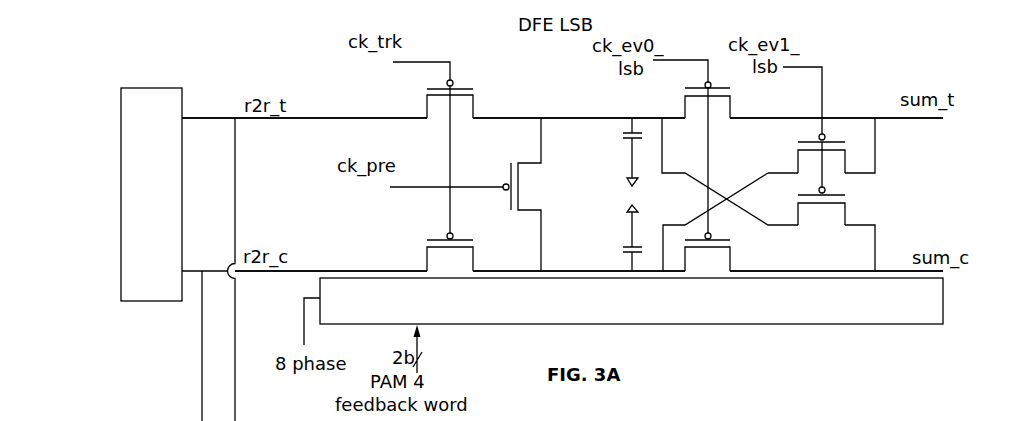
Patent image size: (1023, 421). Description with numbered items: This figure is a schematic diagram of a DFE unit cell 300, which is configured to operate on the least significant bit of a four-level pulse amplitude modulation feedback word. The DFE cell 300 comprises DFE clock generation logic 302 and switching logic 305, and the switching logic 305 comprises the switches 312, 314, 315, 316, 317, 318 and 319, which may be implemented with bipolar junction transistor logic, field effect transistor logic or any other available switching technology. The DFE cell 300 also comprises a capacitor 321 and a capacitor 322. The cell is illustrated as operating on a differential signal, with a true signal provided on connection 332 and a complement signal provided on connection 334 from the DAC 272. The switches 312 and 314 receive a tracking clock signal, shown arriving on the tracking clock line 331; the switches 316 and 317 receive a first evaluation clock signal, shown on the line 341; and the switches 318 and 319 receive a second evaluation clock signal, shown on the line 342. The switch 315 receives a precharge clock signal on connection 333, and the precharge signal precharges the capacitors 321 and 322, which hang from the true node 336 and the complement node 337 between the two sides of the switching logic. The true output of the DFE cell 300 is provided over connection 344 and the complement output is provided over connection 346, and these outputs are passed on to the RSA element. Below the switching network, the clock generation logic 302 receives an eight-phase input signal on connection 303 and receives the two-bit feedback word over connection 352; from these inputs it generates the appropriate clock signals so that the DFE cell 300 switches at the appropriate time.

The DFE unit cell 300 is at (110, 74).
The DAC 272 is at (168, 115).
The connection 332 is at (342, 119).
The connection 334 is at (400, 269).
The ck_trk tracking clock line 331 is at (427, 62).
The switch 312 is at (490, 78).
The switch 314 is at (481, 227).
The connection 333 is at (437, 186).
The switch 315 is at (562, 178).
The switching logic 305 is at (566, 62).
The true summing node 336 is at (590, 117).
The complement summing node 337 is at (571, 270).
The capacitor 321 is at (627, 140).
The capacitor 322 is at (623, 247).
The ck_ev0_lsb clock line 341 is at (697, 60).
The switch 316 is at (748, 95).
The switch 317 is at (752, 248).
The ck_ev1_lsb clock line 342 is at (822, 62).
The switch 318 is at (778, 140).
The switch 319 is at (866, 205).
The connection 344 is at (907, 119).
The connection 346 is at (893, 270).
The DFE clock generation logic 302 is at (360, 318).
The connection 303 is at (303, 308).
The connection 352 is at (418, 346).